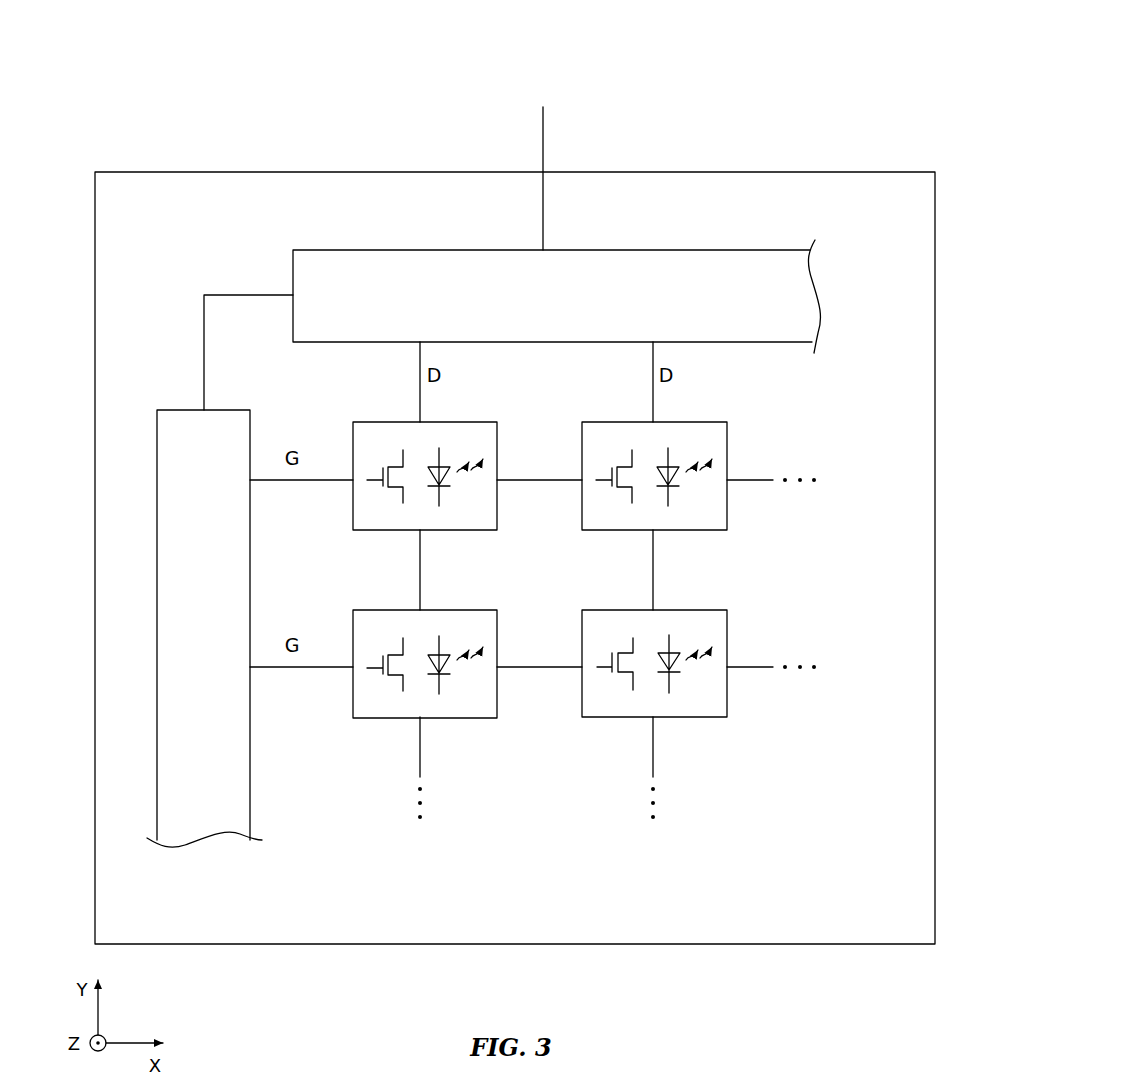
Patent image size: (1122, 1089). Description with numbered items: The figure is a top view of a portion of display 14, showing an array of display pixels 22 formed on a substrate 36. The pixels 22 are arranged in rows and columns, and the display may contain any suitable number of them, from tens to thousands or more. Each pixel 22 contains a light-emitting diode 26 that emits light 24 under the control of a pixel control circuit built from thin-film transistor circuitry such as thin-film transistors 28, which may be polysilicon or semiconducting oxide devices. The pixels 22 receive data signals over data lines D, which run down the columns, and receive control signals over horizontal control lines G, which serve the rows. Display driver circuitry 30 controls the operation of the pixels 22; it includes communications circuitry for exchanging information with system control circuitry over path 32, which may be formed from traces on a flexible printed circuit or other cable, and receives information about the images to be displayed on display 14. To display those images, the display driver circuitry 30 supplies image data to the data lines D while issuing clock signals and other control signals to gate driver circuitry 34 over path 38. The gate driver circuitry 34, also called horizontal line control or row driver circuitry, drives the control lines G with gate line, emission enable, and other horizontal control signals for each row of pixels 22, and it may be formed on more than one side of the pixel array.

The display 14 is at (822, 58).
The display pixel 22 is at (678, 567).
The light 24 is at (693, 660).
The light-emitting diode 26 is at (678, 695).
The thin-film transistor 28 is at (620, 695).
The display driver circuitry 30 is at (365, 249).
The path 32 is at (543, 128).
The gate driver circuitry 34 is at (237, 798).
The substrate 36 is at (925, 870).
The path 38 is at (240, 295).